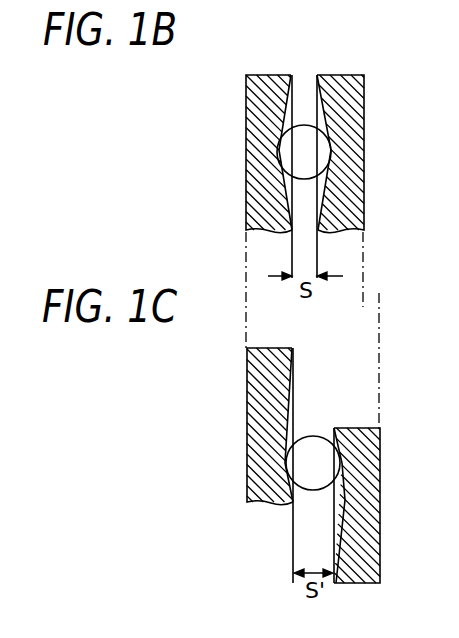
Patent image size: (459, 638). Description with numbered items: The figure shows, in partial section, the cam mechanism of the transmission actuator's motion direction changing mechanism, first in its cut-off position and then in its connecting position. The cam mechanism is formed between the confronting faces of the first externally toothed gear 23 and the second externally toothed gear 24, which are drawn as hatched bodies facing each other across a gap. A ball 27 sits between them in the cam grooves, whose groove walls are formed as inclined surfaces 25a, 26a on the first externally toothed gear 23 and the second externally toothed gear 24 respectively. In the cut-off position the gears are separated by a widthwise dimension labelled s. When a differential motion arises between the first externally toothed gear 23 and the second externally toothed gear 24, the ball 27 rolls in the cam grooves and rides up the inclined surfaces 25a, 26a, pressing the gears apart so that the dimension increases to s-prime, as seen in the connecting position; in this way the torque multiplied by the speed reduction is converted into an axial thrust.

In FIG. 1B, the first externally toothed gear 23 is at (246, 118).
In FIG. 1C, the first externally toothed gear 23 is at (247, 484).
In FIG. 1B, the second externally toothed gear 24 is at (364, 104).
In FIG. 1C, the second externally toothed gear 24 is at (380, 541).
In FIG. 1B, the inclined surface 25a is at (285, 198).
In FIG. 1C, the inclined surface 25a is at (284, 436).
In FIG. 1B, the inclined surface 26a is at (323, 124).
In FIG. 1C, the inclined surface 26a is at (344, 482).
In FIG. 1B, the ball 27 is at (304, 125).
In FIG. 1C, the ball 27 is at (312, 436).